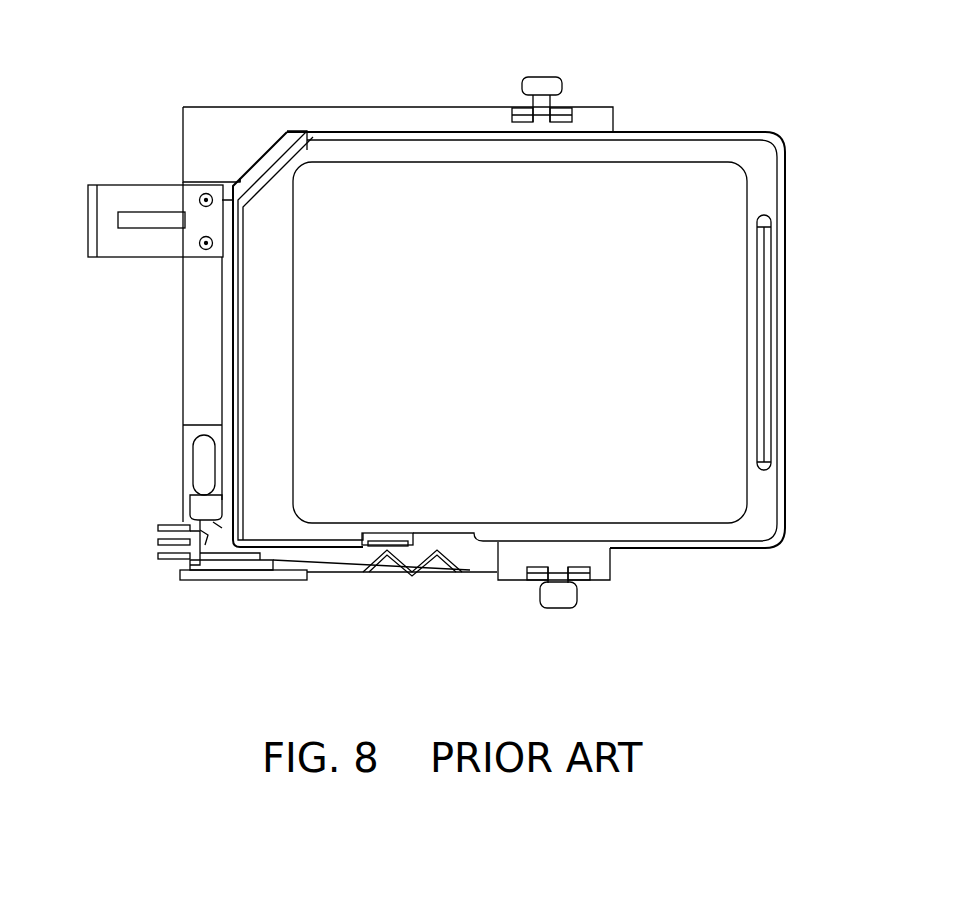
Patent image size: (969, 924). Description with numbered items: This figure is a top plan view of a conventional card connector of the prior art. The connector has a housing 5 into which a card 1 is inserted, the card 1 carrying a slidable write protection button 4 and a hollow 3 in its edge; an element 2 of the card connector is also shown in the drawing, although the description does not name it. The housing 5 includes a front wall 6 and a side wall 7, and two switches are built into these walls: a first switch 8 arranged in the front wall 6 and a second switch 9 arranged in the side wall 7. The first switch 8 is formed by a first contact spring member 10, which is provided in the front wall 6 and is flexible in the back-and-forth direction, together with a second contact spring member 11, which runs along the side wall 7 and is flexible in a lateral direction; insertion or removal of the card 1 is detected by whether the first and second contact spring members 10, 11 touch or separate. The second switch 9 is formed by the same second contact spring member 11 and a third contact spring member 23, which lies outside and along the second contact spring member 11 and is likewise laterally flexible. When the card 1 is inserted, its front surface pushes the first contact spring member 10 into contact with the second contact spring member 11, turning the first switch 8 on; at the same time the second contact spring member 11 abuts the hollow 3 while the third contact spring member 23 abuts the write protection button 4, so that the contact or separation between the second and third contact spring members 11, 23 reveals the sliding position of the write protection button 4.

The card 1 is at (730, 198).
The frame 2 is at (702, 550).
The hollow 3 is at (462, 538).
The write protection button 4 is at (386, 542).
The housing 5 is at (282, 104).
The front wall 6 is at (205, 333).
The side wall 7 is at (490, 566).
The first switch 8 is at (168, 512).
The second switch 9 is at (330, 578).
The first contact spring member 10 is at (190, 470).
The second contact spring member 11 is at (275, 568).
The third contact spring member 23 is at (393, 576).